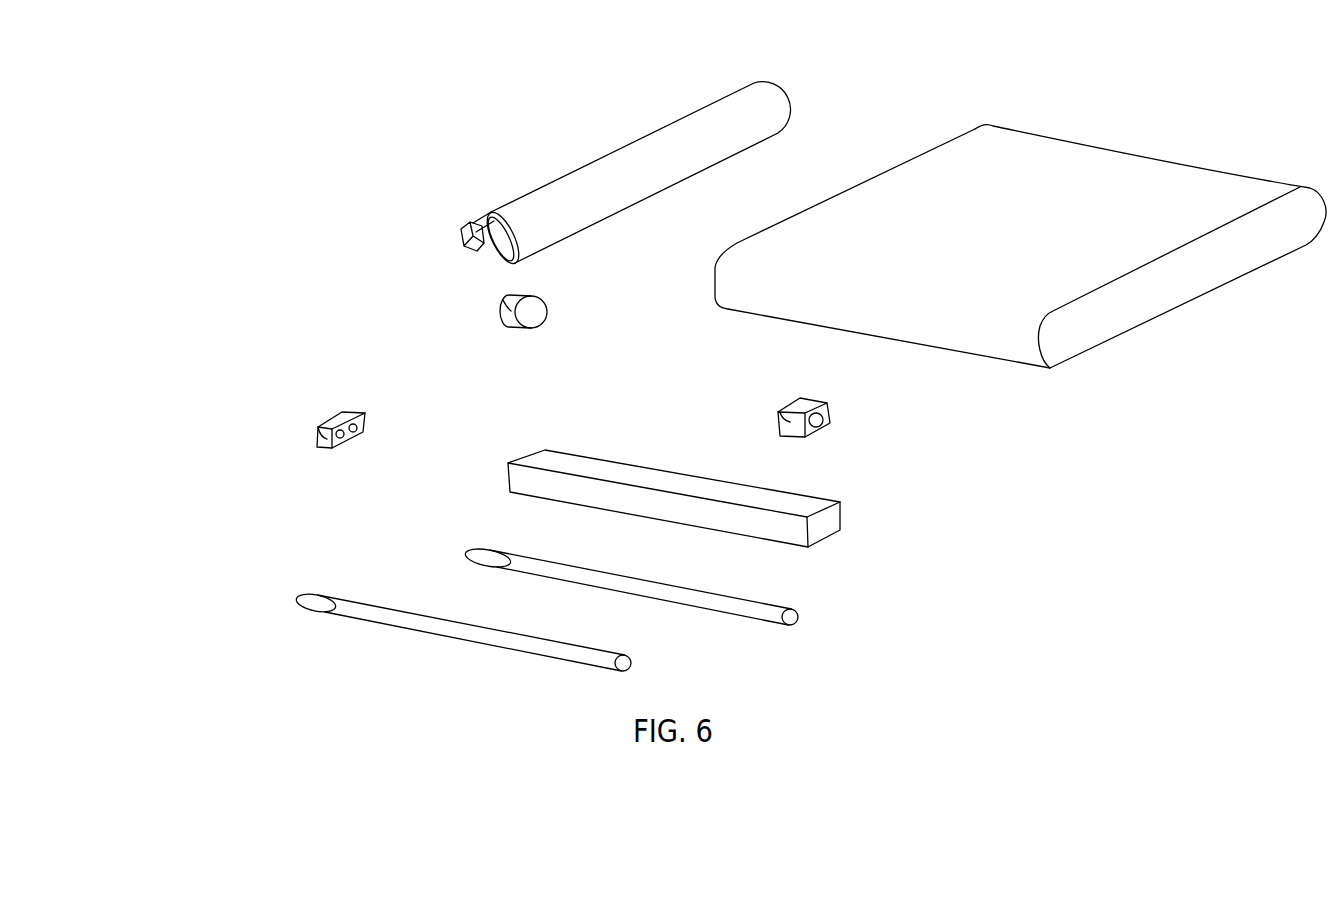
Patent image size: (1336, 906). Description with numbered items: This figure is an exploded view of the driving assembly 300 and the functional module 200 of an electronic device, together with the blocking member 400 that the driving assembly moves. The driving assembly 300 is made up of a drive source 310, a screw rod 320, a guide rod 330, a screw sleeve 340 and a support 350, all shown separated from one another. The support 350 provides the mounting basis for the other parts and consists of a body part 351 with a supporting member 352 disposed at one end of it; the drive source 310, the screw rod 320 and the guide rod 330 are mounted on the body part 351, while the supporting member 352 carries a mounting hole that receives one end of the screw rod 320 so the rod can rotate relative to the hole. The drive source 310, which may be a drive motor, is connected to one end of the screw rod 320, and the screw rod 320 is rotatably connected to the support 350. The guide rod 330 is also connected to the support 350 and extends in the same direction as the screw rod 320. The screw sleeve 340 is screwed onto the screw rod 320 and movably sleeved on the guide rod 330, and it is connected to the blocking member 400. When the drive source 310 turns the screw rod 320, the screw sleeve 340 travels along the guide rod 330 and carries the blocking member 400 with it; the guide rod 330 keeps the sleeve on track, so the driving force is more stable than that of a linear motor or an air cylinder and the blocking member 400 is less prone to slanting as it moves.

The functional module 200 is at (1078, 323).
The driving assembly 300 is at (177, 310).
The drive source 310 is at (497, 303).
The screw rod 320 is at (303, 596).
The guide rod 330 is at (320, 425).
The screw sleeve 340 is at (467, 553).
The support 350 is at (257, 473).
The body part 351 is at (627, 497).
The supporting member 352 is at (780, 412).
The blocking member 400 is at (595, 188).